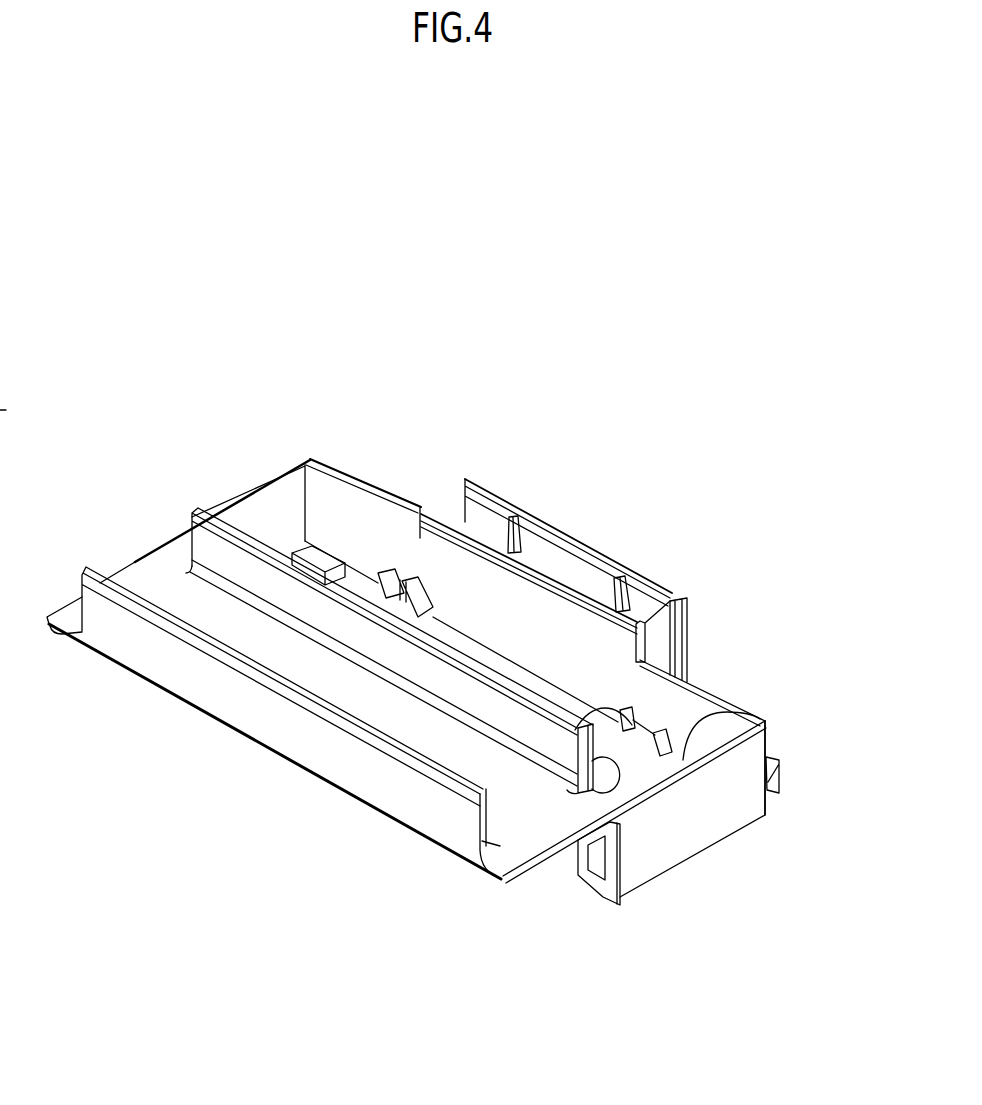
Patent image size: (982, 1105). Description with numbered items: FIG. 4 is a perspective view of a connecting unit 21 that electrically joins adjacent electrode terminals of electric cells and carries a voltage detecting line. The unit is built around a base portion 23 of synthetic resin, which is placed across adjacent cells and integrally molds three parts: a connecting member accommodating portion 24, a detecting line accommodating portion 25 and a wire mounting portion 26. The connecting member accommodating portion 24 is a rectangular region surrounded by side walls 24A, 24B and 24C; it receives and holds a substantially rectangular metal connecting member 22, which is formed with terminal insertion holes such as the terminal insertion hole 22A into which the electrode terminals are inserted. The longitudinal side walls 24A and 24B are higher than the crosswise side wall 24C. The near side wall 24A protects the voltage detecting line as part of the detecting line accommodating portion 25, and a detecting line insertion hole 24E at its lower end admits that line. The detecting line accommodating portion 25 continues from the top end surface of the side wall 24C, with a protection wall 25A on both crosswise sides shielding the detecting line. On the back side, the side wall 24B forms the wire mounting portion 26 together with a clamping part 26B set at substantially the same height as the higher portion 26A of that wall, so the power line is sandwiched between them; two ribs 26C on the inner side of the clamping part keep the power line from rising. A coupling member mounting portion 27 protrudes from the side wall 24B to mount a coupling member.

The connecting unit 21 is at (449, 538).
The connecting member 22 is at (482, 564).
The terminal insertion hole 22A is at (686, 707).
The base portion 23 is at (274, 738).
The connecting member accommodating portion 24 is at (716, 778).
The side wall 24A is at (634, 839).
The side wall 24B is at (764, 711).
The side wall 24C is at (456, 634).
The detecting line insertion hole 24E is at (639, 889).
The detecting line accommodating portion 25 is at (337, 634).
The protection wall 25A is at (454, 809).
The wire mounting portion 26 is at (565, 618).
The portion 26A is at (384, 465).
The clamping part 26B is at (568, 485).
The rib 26C is at (572, 491).
The coupling member mounting portion 27 is at (809, 778).